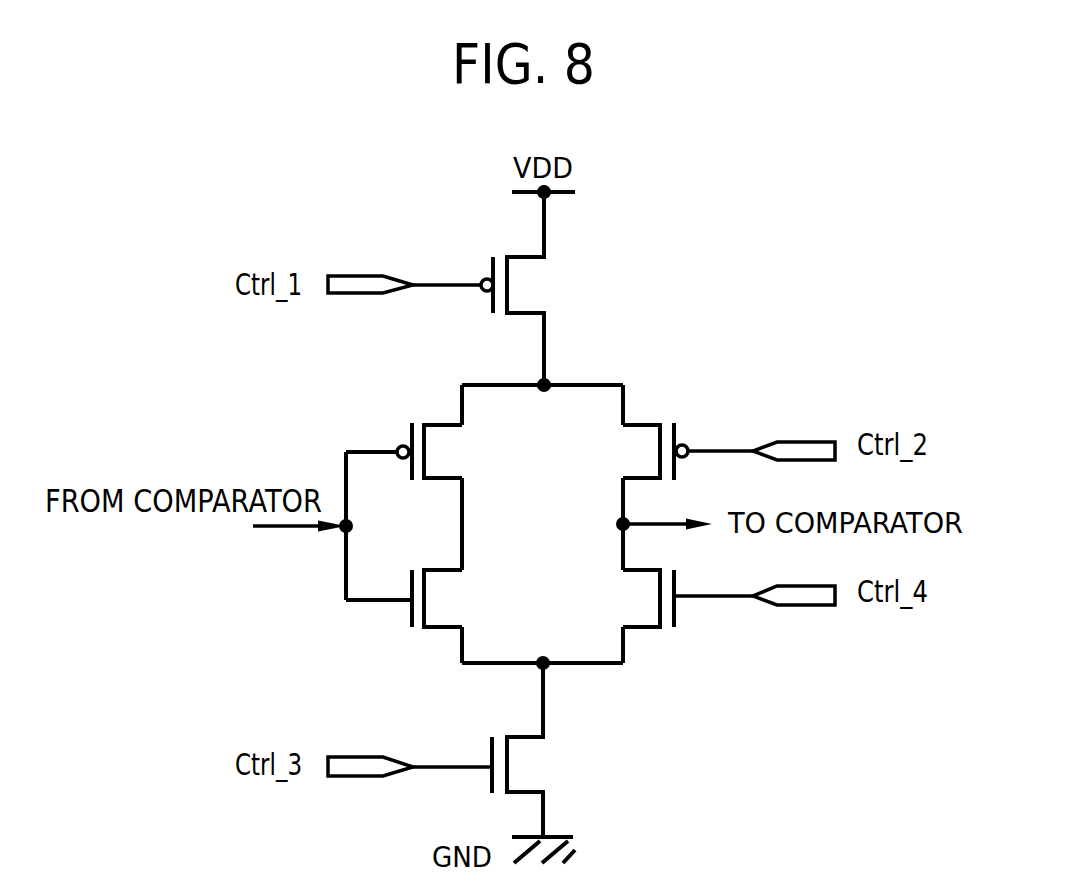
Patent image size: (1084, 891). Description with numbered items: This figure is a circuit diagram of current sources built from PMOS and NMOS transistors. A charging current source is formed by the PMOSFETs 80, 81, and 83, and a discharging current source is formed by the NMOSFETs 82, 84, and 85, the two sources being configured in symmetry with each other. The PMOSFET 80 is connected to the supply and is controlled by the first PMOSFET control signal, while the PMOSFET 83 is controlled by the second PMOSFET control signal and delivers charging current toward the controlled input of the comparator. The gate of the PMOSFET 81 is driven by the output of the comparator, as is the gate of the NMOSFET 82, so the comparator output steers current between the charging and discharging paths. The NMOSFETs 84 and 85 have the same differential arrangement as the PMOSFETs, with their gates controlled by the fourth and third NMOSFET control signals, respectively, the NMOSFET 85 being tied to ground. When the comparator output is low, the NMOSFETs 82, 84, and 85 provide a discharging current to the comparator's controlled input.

The PMOSFET 80 is at (541, 286).
The PMOSFET 81 is at (408, 448).
The NMOSFET 82 is at (408, 617).
The PMOSFET 83 is at (675, 435).
The NMOSFET 84 is at (676, 615).
The NMOSFET 85 is at (540, 770).